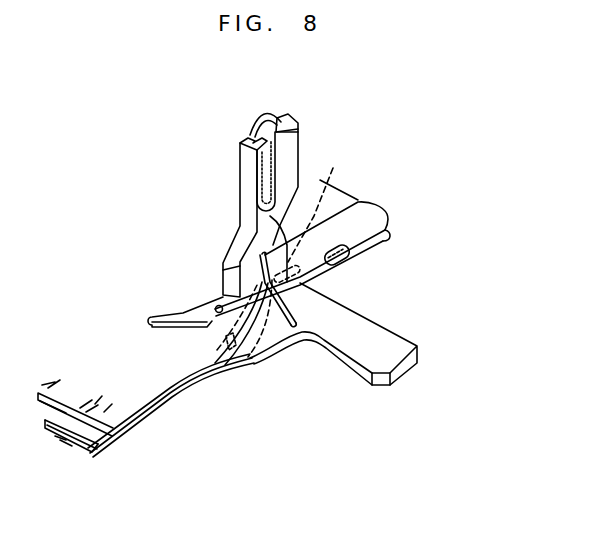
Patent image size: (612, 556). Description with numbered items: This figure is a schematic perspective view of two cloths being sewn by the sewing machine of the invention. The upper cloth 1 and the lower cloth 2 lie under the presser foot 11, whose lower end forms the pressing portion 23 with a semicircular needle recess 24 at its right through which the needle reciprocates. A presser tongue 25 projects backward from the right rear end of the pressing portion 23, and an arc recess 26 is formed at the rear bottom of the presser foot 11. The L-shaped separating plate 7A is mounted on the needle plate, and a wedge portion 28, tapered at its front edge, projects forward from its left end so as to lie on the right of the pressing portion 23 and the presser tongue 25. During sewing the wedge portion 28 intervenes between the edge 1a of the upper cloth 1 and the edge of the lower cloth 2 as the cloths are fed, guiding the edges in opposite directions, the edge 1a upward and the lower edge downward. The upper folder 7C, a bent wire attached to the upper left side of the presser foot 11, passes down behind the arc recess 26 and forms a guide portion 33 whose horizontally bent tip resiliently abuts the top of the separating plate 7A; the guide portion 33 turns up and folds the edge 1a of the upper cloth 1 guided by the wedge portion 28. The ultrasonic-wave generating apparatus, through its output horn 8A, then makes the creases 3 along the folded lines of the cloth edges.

The upper cloth 1 is at (142, 412).
The edge of the upper cloth 1a is at (370, 212).
The lower cloth 2 is at (95, 448).
The creases 3 is at (386, 226).
The separating plate 7A is at (398, 330).
The upper folder 7C is at (289, 338).
The output horn 8A is at (353, 266).
The presser foot 11 is at (250, 178).
The pressing portion 23 is at (202, 304).
The needle recess 24 is at (216, 316).
The presser tongue 25 is at (310, 216).
The arc recess 26 is at (260, 254).
The wedge portion 28 is at (262, 366).
The guide portion 33 is at (289, 296).